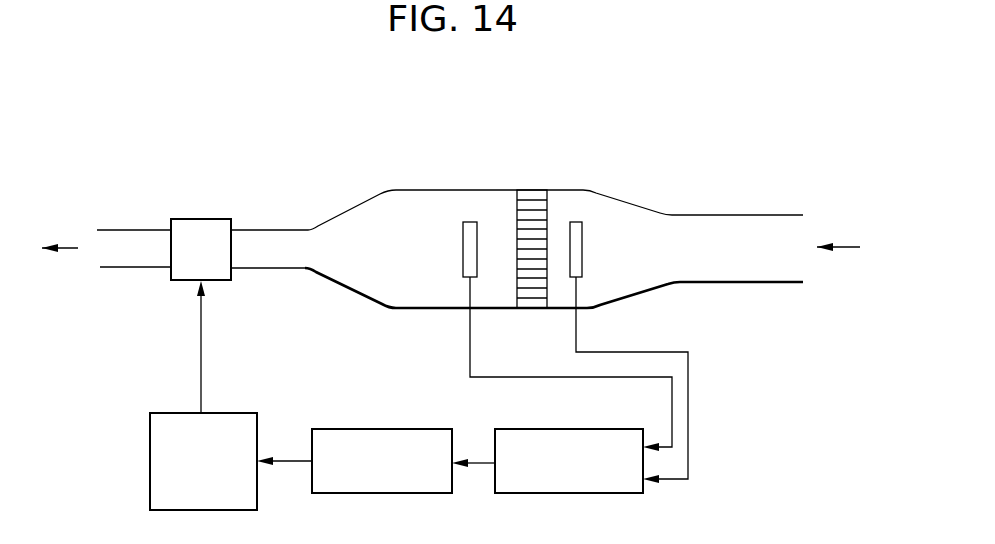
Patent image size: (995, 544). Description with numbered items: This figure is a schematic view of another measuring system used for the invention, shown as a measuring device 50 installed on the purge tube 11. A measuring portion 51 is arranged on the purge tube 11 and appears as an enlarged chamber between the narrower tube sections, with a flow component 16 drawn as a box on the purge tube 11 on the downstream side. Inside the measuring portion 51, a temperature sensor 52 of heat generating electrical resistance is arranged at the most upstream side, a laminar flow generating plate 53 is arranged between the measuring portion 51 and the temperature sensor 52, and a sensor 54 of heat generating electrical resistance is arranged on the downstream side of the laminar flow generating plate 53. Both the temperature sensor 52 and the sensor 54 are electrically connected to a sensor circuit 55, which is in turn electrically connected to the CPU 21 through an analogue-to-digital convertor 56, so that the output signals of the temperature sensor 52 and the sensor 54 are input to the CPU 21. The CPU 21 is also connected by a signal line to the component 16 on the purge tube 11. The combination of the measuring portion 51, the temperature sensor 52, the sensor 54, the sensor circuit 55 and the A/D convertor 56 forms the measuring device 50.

The purge tube 11 is at (753, 215).
The control valve 16 is at (198, 219).
The CPU 21 is at (162, 412).
The measuring device 50 is at (483, 214).
The measuring portion 51 is at (337, 283).
The temperature sensor 52 is at (578, 222).
The laminar flow generating plate 53 is at (530, 190).
The sensor 54 is at (476, 222).
The sensor circuit 55 is at (547, 429).
The analogue-to-digital (A/D) convertor 56 is at (402, 429).